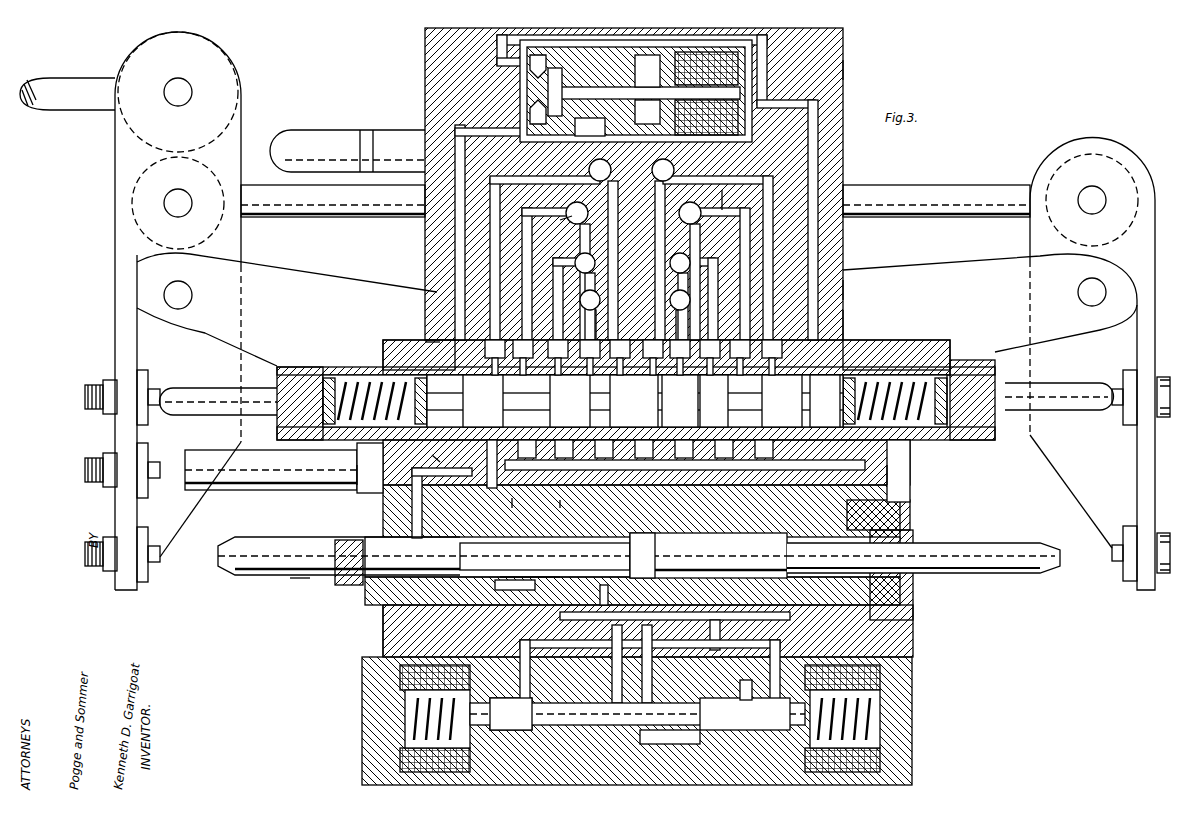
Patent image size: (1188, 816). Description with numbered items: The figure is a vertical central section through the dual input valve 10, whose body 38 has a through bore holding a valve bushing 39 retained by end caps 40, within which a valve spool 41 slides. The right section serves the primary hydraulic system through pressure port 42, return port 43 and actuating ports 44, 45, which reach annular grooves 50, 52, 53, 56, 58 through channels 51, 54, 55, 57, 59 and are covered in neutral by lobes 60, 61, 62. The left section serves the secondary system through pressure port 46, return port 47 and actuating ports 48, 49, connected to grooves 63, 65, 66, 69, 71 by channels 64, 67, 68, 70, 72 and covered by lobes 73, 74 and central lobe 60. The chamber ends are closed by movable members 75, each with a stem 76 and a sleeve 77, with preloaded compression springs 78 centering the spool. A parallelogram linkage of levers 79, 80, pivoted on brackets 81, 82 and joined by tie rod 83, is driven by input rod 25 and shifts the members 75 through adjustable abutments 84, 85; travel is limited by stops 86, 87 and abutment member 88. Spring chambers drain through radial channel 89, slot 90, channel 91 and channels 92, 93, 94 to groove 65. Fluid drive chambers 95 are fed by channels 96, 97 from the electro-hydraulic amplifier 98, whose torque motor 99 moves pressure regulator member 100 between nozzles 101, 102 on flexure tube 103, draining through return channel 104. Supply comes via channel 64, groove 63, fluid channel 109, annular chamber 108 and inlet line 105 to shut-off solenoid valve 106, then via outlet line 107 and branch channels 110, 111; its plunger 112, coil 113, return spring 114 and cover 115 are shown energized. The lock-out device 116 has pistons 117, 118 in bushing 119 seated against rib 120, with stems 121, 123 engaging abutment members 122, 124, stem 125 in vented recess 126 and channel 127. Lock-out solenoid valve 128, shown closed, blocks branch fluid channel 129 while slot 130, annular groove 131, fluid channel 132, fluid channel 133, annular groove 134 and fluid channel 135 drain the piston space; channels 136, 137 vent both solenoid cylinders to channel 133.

The dual input valve 10 is at (850, 70).
The input rod 25 is at (48, 84).
The body 38 is at (844, 152).
The valve bushing 39 is at (843, 322).
The end caps 40 is at (400, 340).
The valve spool 41 is at (680, 401).
The pressure port 42 is at (686, 258).
The return port 43 is at (670, 165).
The actuating port 44 is at (675, 295).
The actuating port 45 is at (684, 218).
The pressure port 46 is at (586, 254).
The return port 47 is at (601, 162).
The actuating port 48 is at (568, 218).
The actuating port 49 is at (593, 293).
The annular groove 50 is at (710, 357).
The channel 51 is at (708, 300).
The annular groove 52 is at (653, 357).
The annular groove 53 is at (772, 357).
The channel 54 is at (640, 275).
The channel 55 is at (742, 245).
The annular groove 56 is at (680, 357).
The channel 57 is at (680, 325).
The annular groove 58 is at (740, 357).
The channel 59 is at (740, 290).
The central lobe 60 is at (634, 401).
The lobe 61 is at (714, 401).
The lobe 62 is at (782, 401).
The annular groove 63 is at (558, 357).
The channel 64 is at (553, 296).
The annular groove 65 is at (495, 357).
The annular groove 66 is at (620, 357).
The channel 67 is at (490, 230).
The channel 68 is at (588, 214).
The annular groove 69 is at (523, 357).
The channel 70 is at (520, 296).
The annular groove 71 is at (590, 357).
The channel 72 is at (585, 330).
The lobe 73 is at (483, 401).
The lobe 74 is at (570, 401).
The movable members 75 is at (288, 377).
The stem 76 is at (203, 390).
The sleeve 77 is at (362, 367).
The compression spring 78 is at (338, 378).
The lever 79 is at (115, 222).
The lever 80 is at (1148, 236).
The bracket 81 is at (320, 270).
The bracket 82 is at (948, 268).
The tie rod 83 is at (940, 190).
The adjustable abutment 84 is at (158, 383).
The adjustable abutment 85 is at (1118, 388).
The stop 86 is at (330, 135).
The stop 87 is at (222, 455).
The adjustable abutment member 88 is at (165, 478).
The radial channel 89 is at (896, 468).
The slot 90 is at (357, 468).
The channel 91 is at (438, 452).
The channel 92 is at (437, 490).
The channel 93 is at (585, 482).
The channel 94 is at (490, 464).
The fluid drive chamber 95 is at (415, 330).
The channel 96 is at (425, 296).
The channel 97 is at (843, 290).
The electro-hydraulic amplifier 98 is at (656, 48).
The torque motor 99 is at (680, 48).
The pressure regulator member 100 is at (578, 92).
The nozzle 101 is at (526, 110).
The nozzle 102 is at (525, 80).
The flexure tube 103 is at (655, 105).
The return channel 104 is at (585, 140).
The inlet line 105 is at (470, 650).
The shut-off solenoid valve 106 is at (544, 736).
The outlet line 107 is at (722, 190).
The annular chamber 108 is at (385, 630).
The fluid channel 109 is at (400, 500).
The branch channel 110 is at (515, 160).
The branch channel 111 is at (762, 155).
The cup-shaped plunger 112 is at (885, 740).
The solenoid coil 113 is at (885, 760).
The return spring 114 is at (880, 700).
The cover 115 is at (362, 765).
The lock-out device 116 is at (304, 588).
The piston 117 is at (530, 576).
The piston 118 is at (708, 555).
The bushing 119 is at (560, 500).
The annular rib 120 is at (640, 536).
The stem 121 is at (262, 540).
The adjustable abutment member 122 is at (163, 580).
The stem 123 is at (1003, 573).
The adjustable abutment member 124 is at (1112, 565).
The stem 125 is at (545, 556).
The recess 126 is at (432, 578).
The channel 127 is at (350, 585).
The lock-out solenoid valve 128 is at (718, 732).
The branch fluid channel 129 is at (752, 685).
The slot 130 is at (600, 598).
The annular groove 131 is at (675, 621).
The fluid channel 132 is at (735, 630).
The fluid channel 133 is at (655, 746).
The annular groove 134 is at (500, 590).
The fluid channel 135 is at (512, 498).
The channel 136 is at (618, 700).
The channel 137 is at (648, 702).